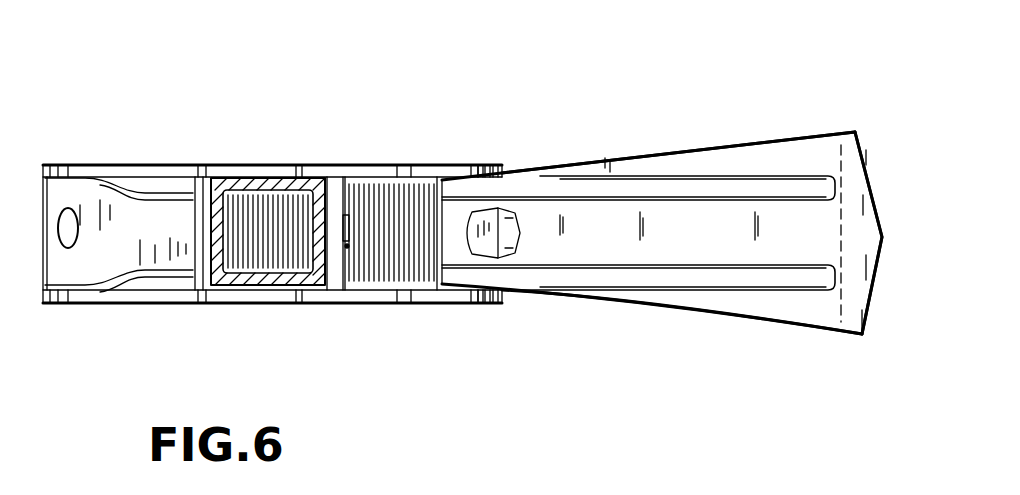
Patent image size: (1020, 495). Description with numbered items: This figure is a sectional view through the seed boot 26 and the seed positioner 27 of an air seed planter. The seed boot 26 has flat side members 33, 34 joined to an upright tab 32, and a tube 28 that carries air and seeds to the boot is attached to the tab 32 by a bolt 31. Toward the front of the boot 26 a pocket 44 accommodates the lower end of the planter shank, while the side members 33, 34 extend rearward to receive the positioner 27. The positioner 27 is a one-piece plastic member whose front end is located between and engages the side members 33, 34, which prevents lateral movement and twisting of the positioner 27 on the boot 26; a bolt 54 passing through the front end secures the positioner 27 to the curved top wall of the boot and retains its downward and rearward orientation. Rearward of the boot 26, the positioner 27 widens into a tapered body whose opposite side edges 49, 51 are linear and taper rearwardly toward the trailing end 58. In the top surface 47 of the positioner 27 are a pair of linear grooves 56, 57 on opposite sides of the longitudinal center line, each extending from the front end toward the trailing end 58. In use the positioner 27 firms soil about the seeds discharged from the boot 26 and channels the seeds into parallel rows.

The seed boot 26 is at (410, 155).
The seed positioner 27 is at (738, 112).
The tube 28 is at (272, 178).
The bolt 31 is at (347, 248).
The upright tab 32 is at (335, 185).
The side member 33 is at (455, 172).
The side member 34 is at (410, 293).
The pocket 44 is at (147, 213).
The top surface 47 is at (775, 228).
The side edge 49 is at (690, 148).
The side edge 51 is at (780, 327).
The bolt 54 is at (492, 233).
The groove 56 is at (638, 188).
The groove 57 is at (655, 282).
The trailing end 58 is at (875, 180).